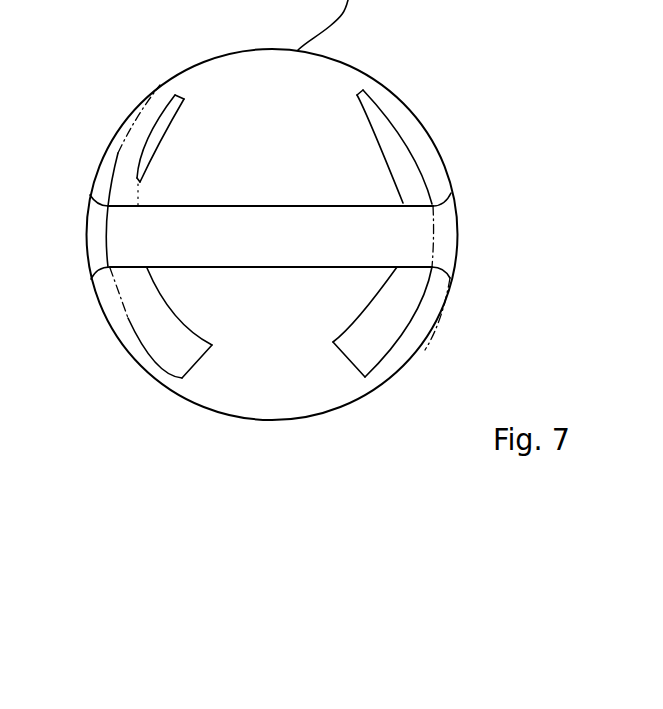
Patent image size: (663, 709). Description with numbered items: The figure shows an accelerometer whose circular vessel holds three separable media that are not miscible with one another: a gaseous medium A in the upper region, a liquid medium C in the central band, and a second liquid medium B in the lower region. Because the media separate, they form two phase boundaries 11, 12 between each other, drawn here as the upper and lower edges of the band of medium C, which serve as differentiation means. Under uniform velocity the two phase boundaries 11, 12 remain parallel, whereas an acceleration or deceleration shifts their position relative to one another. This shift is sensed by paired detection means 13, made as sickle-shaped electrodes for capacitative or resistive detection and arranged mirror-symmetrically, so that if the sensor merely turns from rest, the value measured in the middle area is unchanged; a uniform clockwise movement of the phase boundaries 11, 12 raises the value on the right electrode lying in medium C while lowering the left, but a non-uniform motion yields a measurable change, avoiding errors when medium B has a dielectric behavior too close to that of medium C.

The phase boundary 11 is at (222, 206).
The phase boundary 12 is at (259, 268).
The detection means 13 is at (137, 182).
The gaseous medium A is at (293, 112).
The liquid medium B is at (287, 388).
The liquid medium C is at (353, 246).